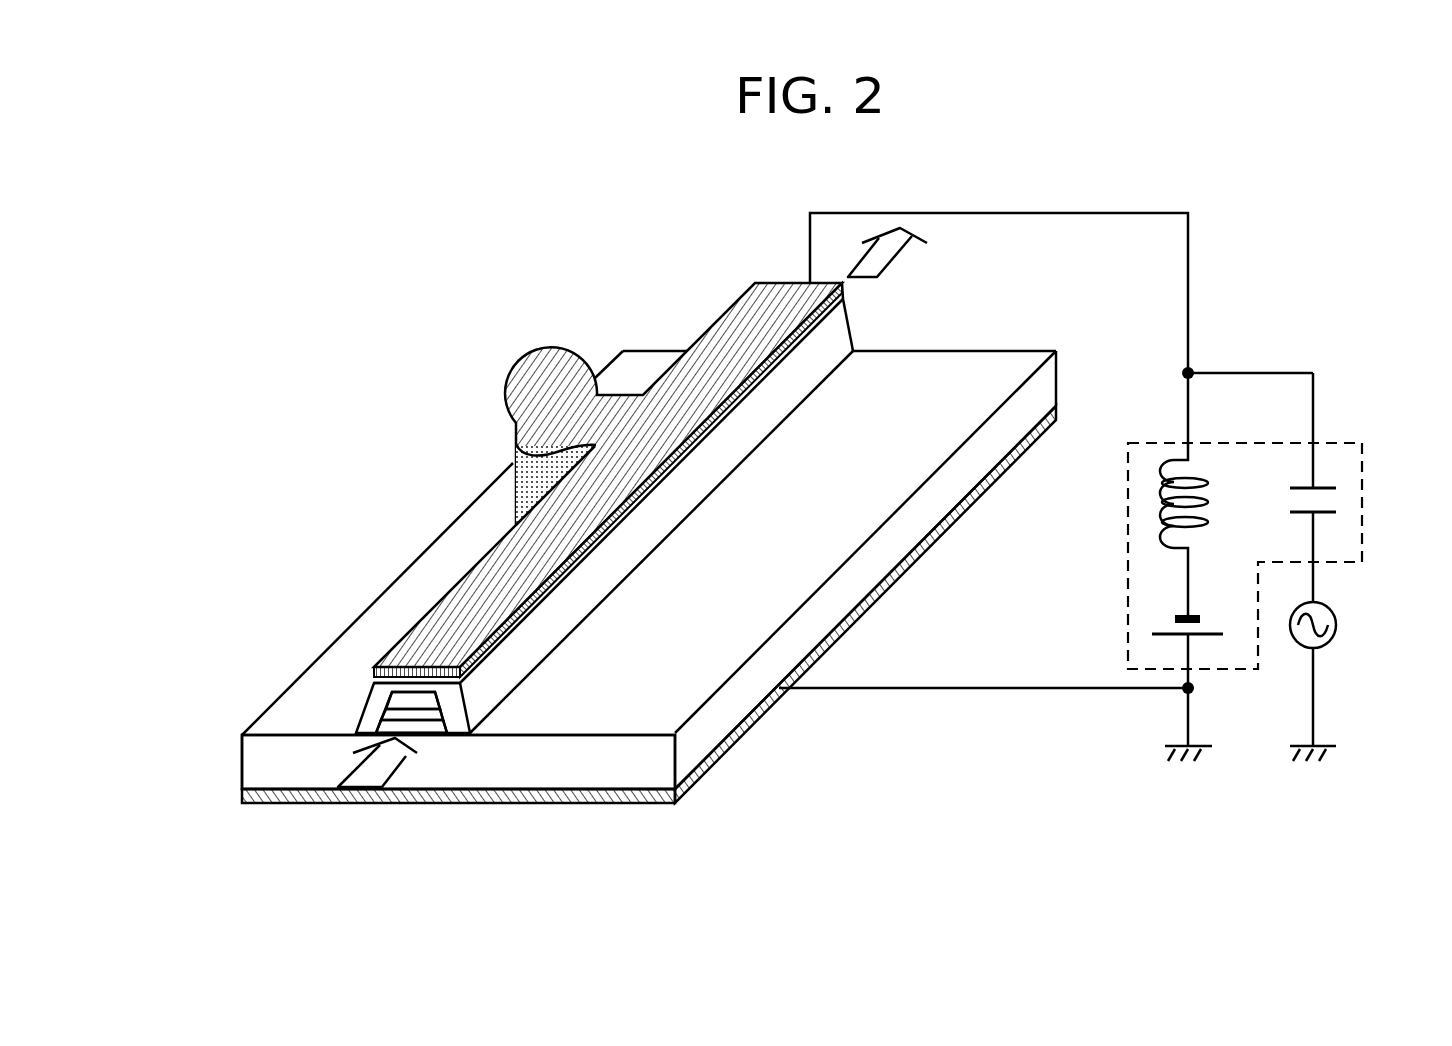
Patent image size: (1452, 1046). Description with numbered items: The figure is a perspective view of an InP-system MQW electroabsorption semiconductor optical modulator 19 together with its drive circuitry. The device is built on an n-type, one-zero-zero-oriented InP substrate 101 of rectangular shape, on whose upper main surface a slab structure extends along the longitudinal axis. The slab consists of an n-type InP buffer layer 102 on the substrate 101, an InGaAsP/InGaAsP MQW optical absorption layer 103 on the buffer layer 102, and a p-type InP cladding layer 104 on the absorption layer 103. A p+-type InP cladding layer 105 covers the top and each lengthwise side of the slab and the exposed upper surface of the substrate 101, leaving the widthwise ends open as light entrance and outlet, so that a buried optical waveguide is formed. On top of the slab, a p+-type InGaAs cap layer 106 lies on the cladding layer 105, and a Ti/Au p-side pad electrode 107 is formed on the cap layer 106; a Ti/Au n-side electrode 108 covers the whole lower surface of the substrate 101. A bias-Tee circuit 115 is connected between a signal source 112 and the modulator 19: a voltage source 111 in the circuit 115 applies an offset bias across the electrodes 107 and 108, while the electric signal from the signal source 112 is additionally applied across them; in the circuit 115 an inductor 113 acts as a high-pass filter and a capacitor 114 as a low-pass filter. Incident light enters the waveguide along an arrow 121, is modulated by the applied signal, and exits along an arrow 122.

The semiconductor optical modulator 19 is at (473, 303).
The InP substrate 101 is at (430, 777).
The n-type InP buffer layer 102 is at (393, 726).
The MQW optical absorption layer 103 is at (393, 713).
The p-type InP cladding layer 104 is at (393, 701).
The p+-type InP cladding layer 105 is at (457, 711).
The p+-type InGaAs cap layer 106 is at (375, 676).
The p-side pad electrode 107 is at (741, 296).
The n-side electrode 108 is at (303, 805).
The voltage source 111 is at (1160, 627).
The signal source 112 is at (1338, 618).
The inductor 113 is at (1158, 517).
The capacitor 114 is at (1340, 498).
The bias-Tee circuit 115 is at (1352, 440).
The arrow 121 is at (372, 767).
The arrow 122 is at (896, 262).